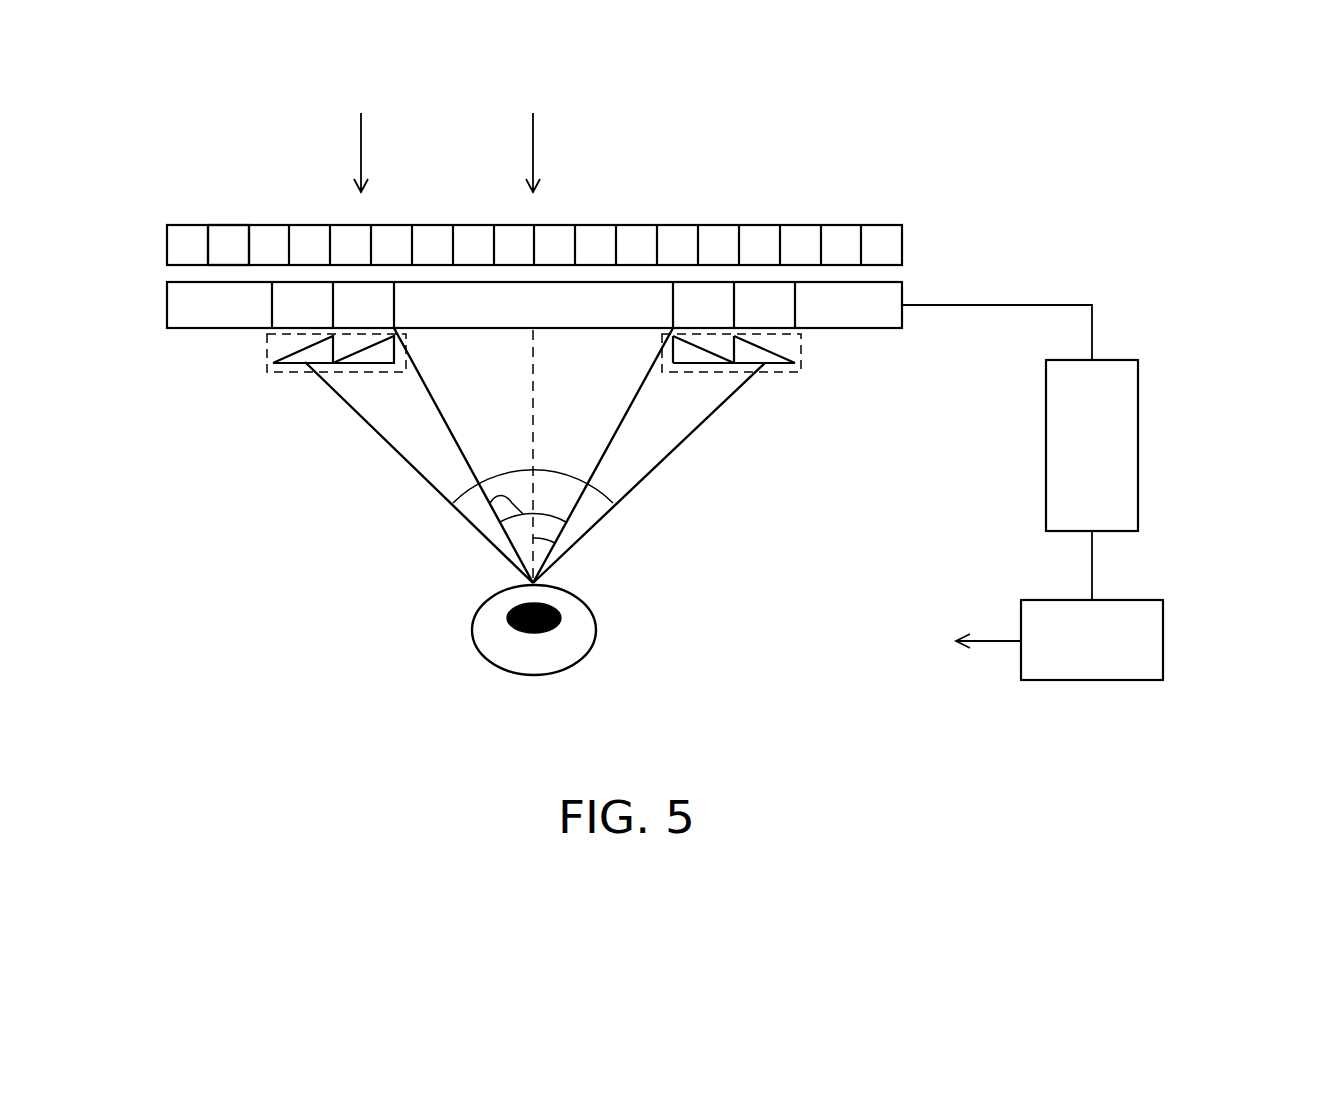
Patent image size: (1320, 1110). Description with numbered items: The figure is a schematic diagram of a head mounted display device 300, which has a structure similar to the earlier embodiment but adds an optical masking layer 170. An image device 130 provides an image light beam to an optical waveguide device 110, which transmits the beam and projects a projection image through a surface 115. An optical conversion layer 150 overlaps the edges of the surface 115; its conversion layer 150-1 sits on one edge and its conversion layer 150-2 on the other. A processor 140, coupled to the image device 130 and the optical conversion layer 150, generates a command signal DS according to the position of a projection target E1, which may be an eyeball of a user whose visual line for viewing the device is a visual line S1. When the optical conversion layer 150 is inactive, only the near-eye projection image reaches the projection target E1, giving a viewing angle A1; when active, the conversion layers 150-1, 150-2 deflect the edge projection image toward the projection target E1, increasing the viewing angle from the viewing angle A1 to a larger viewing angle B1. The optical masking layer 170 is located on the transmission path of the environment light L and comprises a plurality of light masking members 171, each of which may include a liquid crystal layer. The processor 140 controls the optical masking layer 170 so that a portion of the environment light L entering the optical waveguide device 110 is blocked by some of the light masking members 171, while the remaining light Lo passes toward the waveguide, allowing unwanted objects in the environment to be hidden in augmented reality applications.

The head mounted display device 300 is at (1173, 805).
The optical masking layer 170 is at (802, 226).
The light masking members 171 is at (230, 240).
The light Lo is at (370, 133).
The environment light L is at (534, 133).
The optical waveguide device 110 is at (890, 295).
The surface 115 is at (204, 349).
The conversion layer 150-1 is at (267, 362).
The conversion layer 150-2 is at (801, 364).
The optical conversion layer 150 is at (186, 730).
The command signal DS is at (300, 386).
The viewing angle A1 is at (466, 524).
The viewing angle B1 is at (558, 471).
The visual line S1 is at (560, 547).
The projection target E1 is at (582, 633).
The image device 130 is at (1139, 427).
The processor 140 is at (1163, 642).